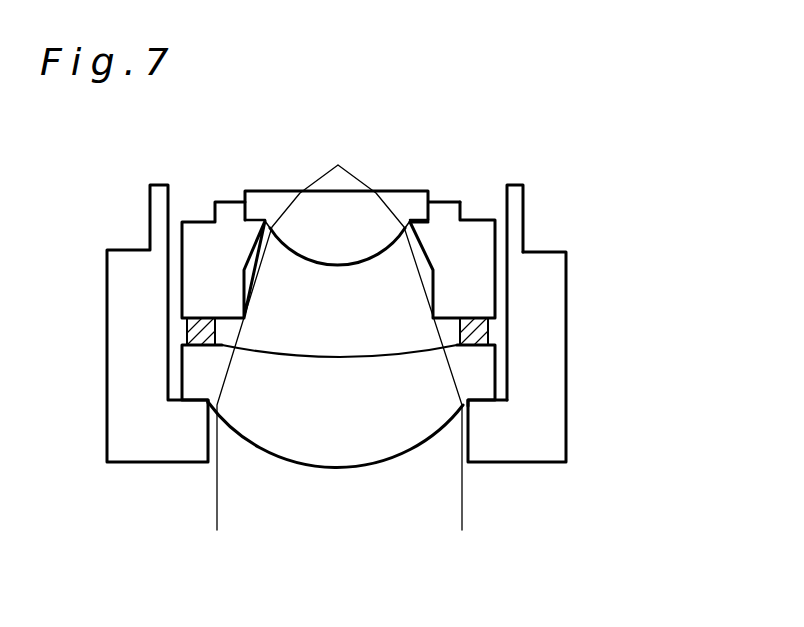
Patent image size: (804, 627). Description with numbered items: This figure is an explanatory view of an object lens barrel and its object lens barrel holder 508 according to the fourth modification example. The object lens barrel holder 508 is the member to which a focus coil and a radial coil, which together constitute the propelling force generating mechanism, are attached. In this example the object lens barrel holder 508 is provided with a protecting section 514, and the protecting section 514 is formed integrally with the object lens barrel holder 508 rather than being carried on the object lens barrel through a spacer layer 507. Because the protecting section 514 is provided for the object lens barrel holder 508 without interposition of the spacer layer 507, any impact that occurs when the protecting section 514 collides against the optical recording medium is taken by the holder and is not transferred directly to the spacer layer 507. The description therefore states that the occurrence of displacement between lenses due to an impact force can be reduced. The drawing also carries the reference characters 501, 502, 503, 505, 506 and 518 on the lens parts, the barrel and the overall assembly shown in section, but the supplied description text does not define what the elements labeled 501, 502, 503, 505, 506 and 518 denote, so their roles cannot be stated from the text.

The first lens 501 is at (302, 440).
The second lens 502 is at (348, 243).
The objective lens unit 503 is at (335, 409).
The lens cap ring 505 is at (448, 212).
The lens holder 506 is at (242, 313).
The spacer layer 507 is at (478, 335).
The object lens barrel holder 508 is at (552, 295).
The protecting section 514 is at (517, 202).
The lens assembly 518 is at (353, 361).